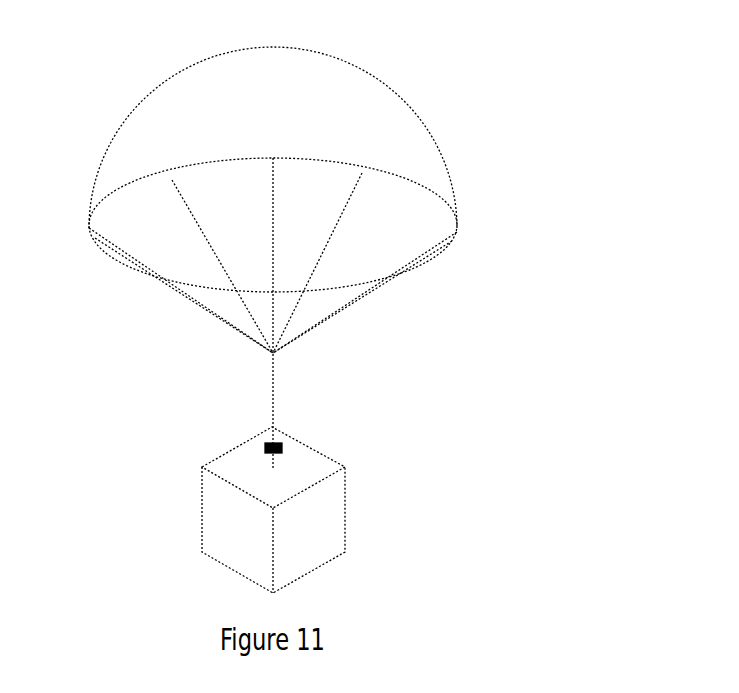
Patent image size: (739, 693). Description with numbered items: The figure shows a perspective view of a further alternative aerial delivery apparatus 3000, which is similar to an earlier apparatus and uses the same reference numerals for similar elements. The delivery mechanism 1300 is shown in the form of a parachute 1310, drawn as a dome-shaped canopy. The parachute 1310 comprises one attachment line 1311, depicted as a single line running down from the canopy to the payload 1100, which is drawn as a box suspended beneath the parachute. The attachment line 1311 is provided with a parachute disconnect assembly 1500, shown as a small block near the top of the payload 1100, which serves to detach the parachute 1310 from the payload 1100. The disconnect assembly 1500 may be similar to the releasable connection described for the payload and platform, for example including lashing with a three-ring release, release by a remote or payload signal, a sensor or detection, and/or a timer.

The aerial delivery apparatus 3000 is at (341, 308).
The delivery mechanism 1300 is at (341, 258).
The parachute 1310 is at (422, 162).
The attachment line 1311 is at (273, 372).
The parachute disconnect assembly 1500 is at (282, 448).
The payload 1100 is at (332, 517).